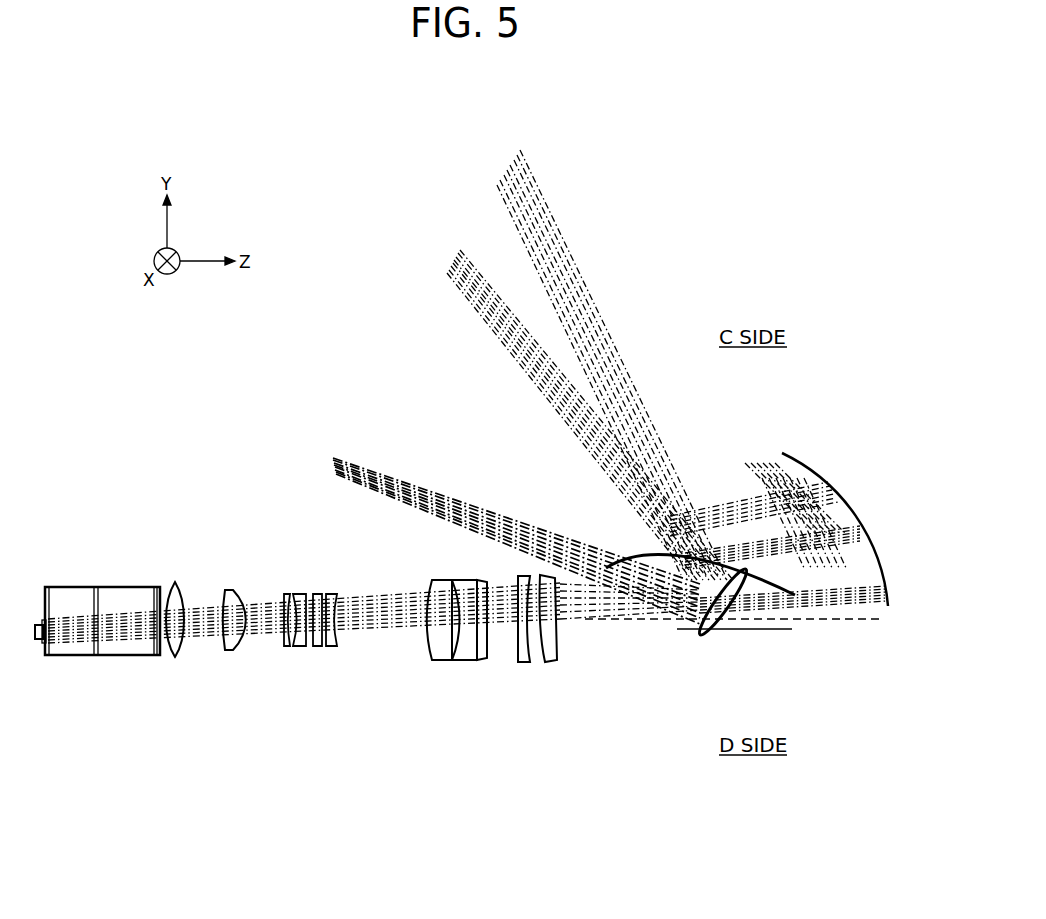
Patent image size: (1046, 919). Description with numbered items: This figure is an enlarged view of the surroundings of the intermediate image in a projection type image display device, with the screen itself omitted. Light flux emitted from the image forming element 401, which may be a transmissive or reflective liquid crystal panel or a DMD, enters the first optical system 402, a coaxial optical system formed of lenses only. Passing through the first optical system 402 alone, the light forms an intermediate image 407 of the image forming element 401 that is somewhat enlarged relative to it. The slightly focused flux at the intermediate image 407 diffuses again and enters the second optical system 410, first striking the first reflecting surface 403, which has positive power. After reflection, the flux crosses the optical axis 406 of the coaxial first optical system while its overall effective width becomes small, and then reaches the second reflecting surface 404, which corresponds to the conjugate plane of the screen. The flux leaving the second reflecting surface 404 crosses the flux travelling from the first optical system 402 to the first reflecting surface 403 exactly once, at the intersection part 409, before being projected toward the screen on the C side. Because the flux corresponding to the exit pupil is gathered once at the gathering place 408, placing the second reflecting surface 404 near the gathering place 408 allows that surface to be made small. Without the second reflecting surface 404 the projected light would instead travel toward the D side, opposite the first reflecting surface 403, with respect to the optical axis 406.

The image forming element 401 is at (38, 642).
The first optical system 402 is at (565, 666).
The first reflecting surface 403 is at (790, 459).
The second reflecting surface 404 is at (792, 631).
The optical axis 406 is at (862, 622).
The intermediate image 407 is at (650, 555).
The gathering place 408 is at (703, 640).
The intersection part 409 is at (672, 604).
The second optical system 410 is at (856, 508).